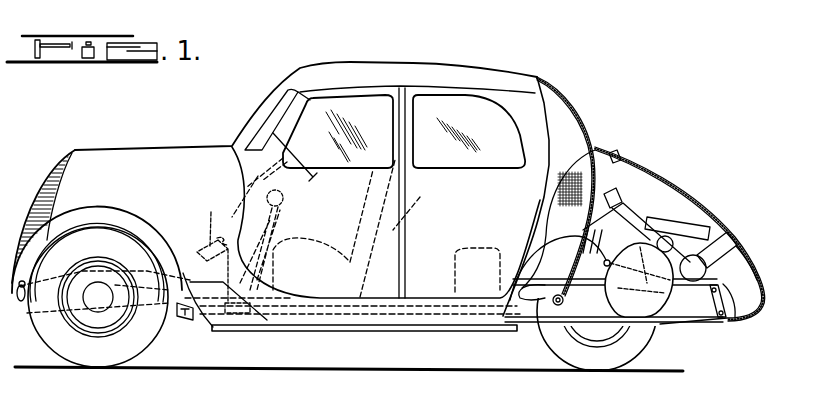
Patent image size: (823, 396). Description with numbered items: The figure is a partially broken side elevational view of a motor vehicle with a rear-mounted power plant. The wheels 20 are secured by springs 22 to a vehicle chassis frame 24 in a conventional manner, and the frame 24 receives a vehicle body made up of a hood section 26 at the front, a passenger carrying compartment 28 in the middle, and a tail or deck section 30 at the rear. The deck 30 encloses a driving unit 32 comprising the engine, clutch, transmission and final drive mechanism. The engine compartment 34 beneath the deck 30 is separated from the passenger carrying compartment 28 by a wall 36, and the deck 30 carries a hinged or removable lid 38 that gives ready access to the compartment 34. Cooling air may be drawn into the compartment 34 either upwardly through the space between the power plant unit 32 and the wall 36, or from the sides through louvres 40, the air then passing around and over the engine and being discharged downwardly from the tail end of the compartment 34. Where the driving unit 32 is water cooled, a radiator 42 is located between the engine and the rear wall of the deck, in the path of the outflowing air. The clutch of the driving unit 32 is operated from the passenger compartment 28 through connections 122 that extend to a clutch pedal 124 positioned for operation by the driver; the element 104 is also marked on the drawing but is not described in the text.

The wheels 20 is at (135, 347).
The springs 22 is at (175, 322).
The vehicle chassis frame 24 is at (228, 330).
The hood section 26 is at (112, 238).
The passenger carrying compartment 28 is at (397, 71).
The tail or deck section 30 is at (736, 243).
The driving unit 32 is at (628, 200).
The engine compartment 34 is at (682, 200).
The wall 36 is at (601, 157).
The hinged or removable lid 38 is at (665, 173).
The louvres 40 is at (541, 232).
The radiator 42 is at (672, 267).
The floor structure 104 is at (267, 390).
The connections 122 is at (339, 325).
The clutch pedal 124 is at (204, 248).